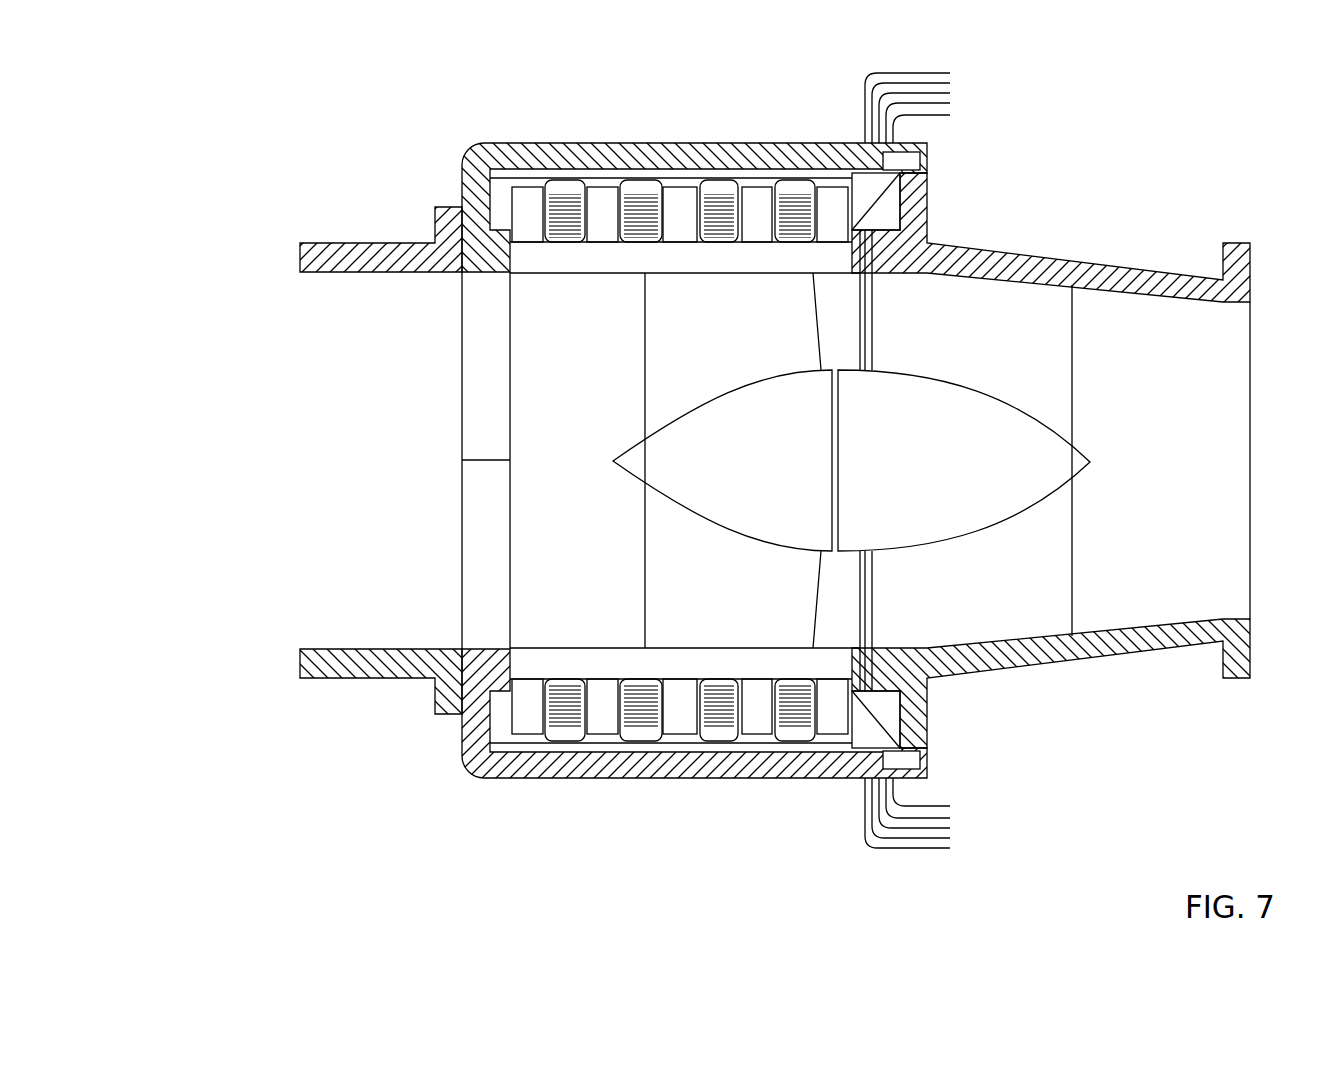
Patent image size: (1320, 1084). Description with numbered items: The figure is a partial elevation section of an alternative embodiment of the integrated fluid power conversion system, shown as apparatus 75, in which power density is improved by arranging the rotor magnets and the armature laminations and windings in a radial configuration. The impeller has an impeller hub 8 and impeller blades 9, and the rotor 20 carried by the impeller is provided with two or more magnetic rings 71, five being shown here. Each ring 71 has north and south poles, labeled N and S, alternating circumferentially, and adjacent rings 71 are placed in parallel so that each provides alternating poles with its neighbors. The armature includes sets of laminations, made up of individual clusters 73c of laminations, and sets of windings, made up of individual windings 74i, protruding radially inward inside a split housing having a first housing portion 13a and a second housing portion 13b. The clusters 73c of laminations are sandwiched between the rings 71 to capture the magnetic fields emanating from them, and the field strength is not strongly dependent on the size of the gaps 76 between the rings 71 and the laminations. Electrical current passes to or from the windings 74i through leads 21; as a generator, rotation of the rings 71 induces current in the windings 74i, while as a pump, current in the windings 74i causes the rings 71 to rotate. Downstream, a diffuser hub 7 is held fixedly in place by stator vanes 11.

The apparatus 75 is at (412, 172).
The clusters of laminations 73c is at (612, 188).
The windings 74i is at (642, 187).
The magnetic rings 71 is at (683, 187).
The gaps 76 is at (765, 185).
The first housing portion 13a is at (822, 150).
The second housing portion 13b is at (826, 765).
The leads 21 is at (950, 73).
The diffuser hub 7 is at (1012, 408).
The rotor 20 is at (540, 257).
The impeller blades 9 is at (740, 349).
The stator vanes 11 is at (985, 354).
The impeller hub 8 is at (688, 507).